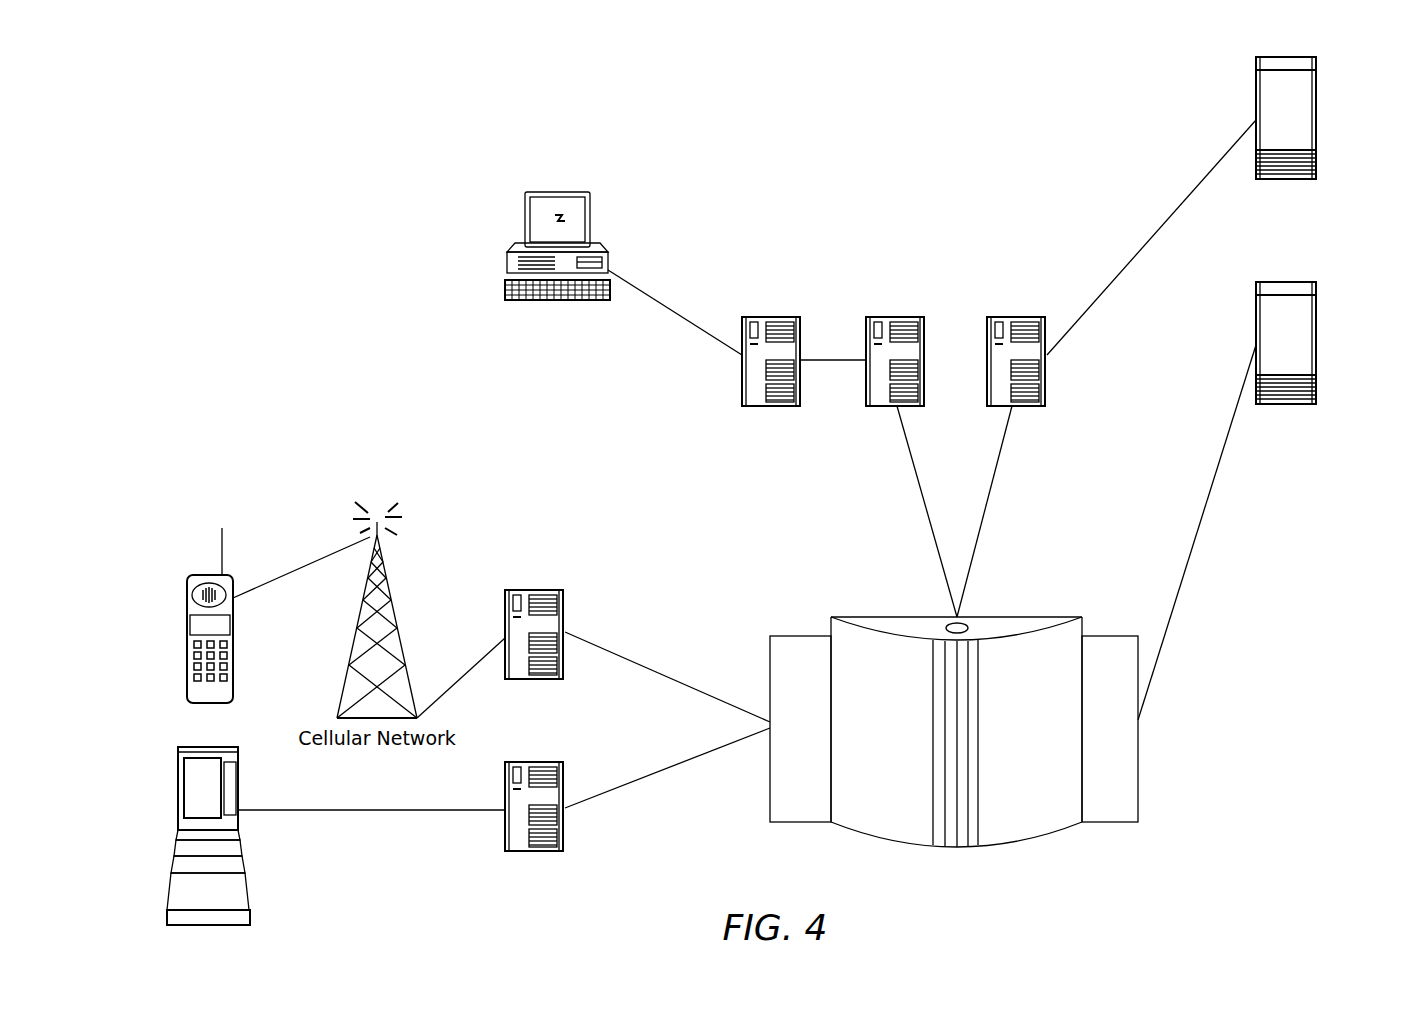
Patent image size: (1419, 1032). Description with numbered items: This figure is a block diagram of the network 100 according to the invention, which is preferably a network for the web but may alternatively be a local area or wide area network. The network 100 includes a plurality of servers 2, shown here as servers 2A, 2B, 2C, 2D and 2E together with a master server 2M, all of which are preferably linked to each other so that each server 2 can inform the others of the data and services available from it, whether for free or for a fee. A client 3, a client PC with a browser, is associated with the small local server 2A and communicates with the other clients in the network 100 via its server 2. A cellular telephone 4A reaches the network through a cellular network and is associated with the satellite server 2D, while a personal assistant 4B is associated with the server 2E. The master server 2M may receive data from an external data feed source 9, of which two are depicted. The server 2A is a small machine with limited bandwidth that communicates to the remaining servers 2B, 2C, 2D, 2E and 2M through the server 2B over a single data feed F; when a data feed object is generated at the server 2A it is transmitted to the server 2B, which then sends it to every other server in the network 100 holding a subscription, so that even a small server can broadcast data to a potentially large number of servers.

The network 100 is at (866, 125).
The client 3 is at (507, 258).
The server 2A is at (748, 317).
The server 2B is at (896, 317).
The server 2C is at (1016, 317).
The server 2 is at (738, 432).
The data feed F is at (835, 360).
The external data feed source 9 is at (1256, 97).
The master server 2M is at (990, 617).
The cellular telephone 4A is at (187, 607).
The personal assistant 4B is at (178, 770).
The server 2D is at (565, 604).
The server 2E is at (565, 831).